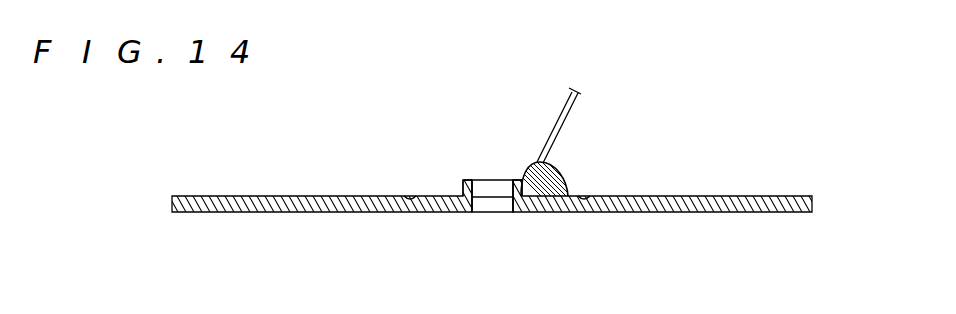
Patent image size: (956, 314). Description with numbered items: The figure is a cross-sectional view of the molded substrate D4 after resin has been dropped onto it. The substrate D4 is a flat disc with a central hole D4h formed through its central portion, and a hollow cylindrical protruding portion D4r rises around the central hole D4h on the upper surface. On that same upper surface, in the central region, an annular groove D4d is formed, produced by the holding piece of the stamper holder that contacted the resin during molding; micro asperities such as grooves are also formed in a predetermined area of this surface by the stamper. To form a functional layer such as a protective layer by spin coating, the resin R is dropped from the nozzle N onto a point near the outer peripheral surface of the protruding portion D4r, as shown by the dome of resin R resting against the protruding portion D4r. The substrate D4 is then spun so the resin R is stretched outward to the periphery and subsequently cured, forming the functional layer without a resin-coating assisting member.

The substrate D4 is at (812, 202).
The central hole D4h is at (489, 212).
The hollow cylindrical protruding portion D4r is at (463, 189).
The annular groove D4d is at (410, 195).
The resin R is at (566, 180).
The nozzle N is at (573, 110).